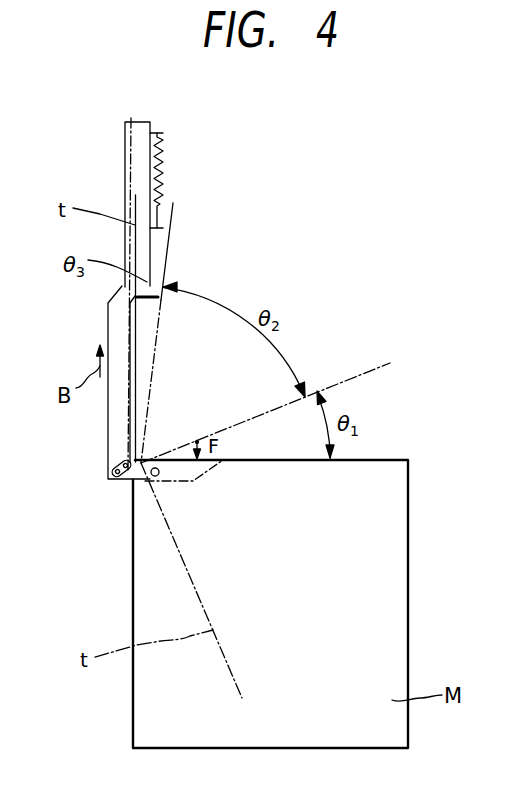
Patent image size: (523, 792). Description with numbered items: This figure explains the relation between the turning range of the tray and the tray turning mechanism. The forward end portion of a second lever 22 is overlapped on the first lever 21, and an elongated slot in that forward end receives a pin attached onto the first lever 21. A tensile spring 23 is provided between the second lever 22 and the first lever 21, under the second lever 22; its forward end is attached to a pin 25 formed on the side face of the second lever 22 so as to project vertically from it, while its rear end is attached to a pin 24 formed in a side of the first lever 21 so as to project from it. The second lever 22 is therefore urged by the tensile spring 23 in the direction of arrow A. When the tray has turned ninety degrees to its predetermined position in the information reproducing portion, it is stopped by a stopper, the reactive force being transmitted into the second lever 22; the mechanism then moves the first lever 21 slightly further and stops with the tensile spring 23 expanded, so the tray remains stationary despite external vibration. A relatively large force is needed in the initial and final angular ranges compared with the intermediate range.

The first lever 21 is at (118, 287).
The second lever 22 is at (108, 310).
The tensile spring 23 is at (162, 172).
The pin 24 is at (157, 228).
The pin 25 is at (157, 134).